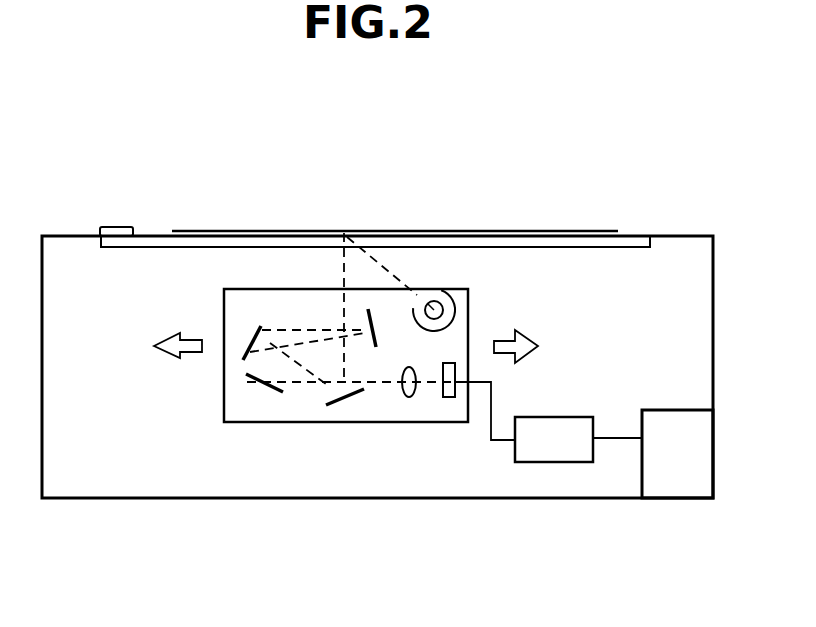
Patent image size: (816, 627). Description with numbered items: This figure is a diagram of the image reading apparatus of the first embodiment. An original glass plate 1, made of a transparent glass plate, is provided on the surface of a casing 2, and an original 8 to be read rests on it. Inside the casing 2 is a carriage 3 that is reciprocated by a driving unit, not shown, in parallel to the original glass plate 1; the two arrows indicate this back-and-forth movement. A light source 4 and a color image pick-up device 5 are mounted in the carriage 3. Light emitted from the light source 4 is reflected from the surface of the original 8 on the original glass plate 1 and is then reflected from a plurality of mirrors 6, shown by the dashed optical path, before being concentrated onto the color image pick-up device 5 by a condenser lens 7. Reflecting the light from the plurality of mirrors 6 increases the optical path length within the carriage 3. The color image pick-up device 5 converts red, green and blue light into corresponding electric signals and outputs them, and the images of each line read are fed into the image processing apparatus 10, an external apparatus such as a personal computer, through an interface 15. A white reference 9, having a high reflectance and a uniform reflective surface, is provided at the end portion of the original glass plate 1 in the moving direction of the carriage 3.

The original glass plate 1 is at (606, 240).
The casing 2 is at (713, 260).
The carriage 3 is at (280, 422).
The light source 4 is at (455, 308).
The color image pick-up device 5 is at (451, 398).
The mirrors 6 is at (244, 352).
The condenser lens 7 is at (410, 398).
The original 8 is at (213, 231).
The white reference 9 is at (115, 229).
The image processing apparatus 10 is at (560, 462).
The interface 15 is at (673, 485).